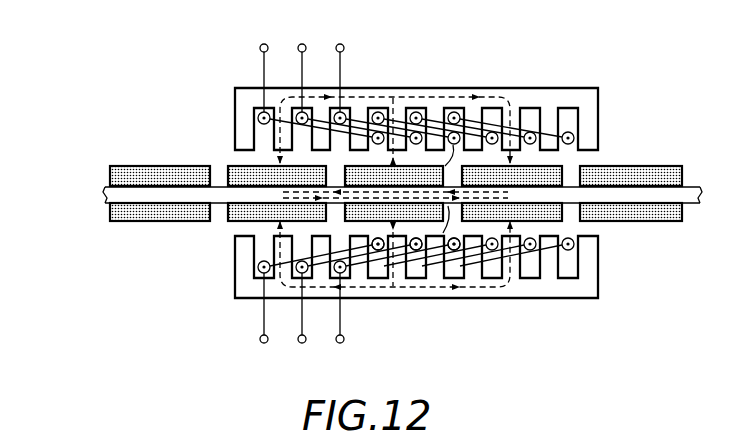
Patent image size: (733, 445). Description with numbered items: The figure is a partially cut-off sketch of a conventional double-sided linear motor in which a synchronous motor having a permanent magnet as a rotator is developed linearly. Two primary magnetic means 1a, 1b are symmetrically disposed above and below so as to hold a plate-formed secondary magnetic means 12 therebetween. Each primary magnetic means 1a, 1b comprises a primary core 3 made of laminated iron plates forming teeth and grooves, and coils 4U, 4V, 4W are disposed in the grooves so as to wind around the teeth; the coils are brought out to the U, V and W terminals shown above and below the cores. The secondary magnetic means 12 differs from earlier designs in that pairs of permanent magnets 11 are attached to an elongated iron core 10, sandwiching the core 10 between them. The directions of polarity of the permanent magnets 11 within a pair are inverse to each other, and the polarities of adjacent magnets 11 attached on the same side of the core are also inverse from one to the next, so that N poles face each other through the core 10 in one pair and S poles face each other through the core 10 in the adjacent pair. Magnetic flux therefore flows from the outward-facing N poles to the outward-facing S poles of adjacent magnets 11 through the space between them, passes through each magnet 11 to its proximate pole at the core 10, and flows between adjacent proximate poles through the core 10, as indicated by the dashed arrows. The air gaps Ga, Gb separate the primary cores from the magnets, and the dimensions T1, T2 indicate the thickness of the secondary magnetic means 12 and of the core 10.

The primary magnetic means 1a is at (241, 84).
The primary magnetic means 1b is at (250, 306).
The primary core 3 is at (598, 92).
The coil 4U is at (376, 112).
The coil 4V is at (414, 112).
The coil 4W is at (452, 112).
The elongated iron core 10 is at (221, 186).
The permanent magnet 11 is at (130, 166).
The secondary magnetic means 12 is at (184, 146).
The upper air gap Ga is at (590, 157).
The lower air gap Gb is at (590, 228).
The overall secondary thickness T1 is at (105, 220).
The rail thickness T2 is at (105, 203).